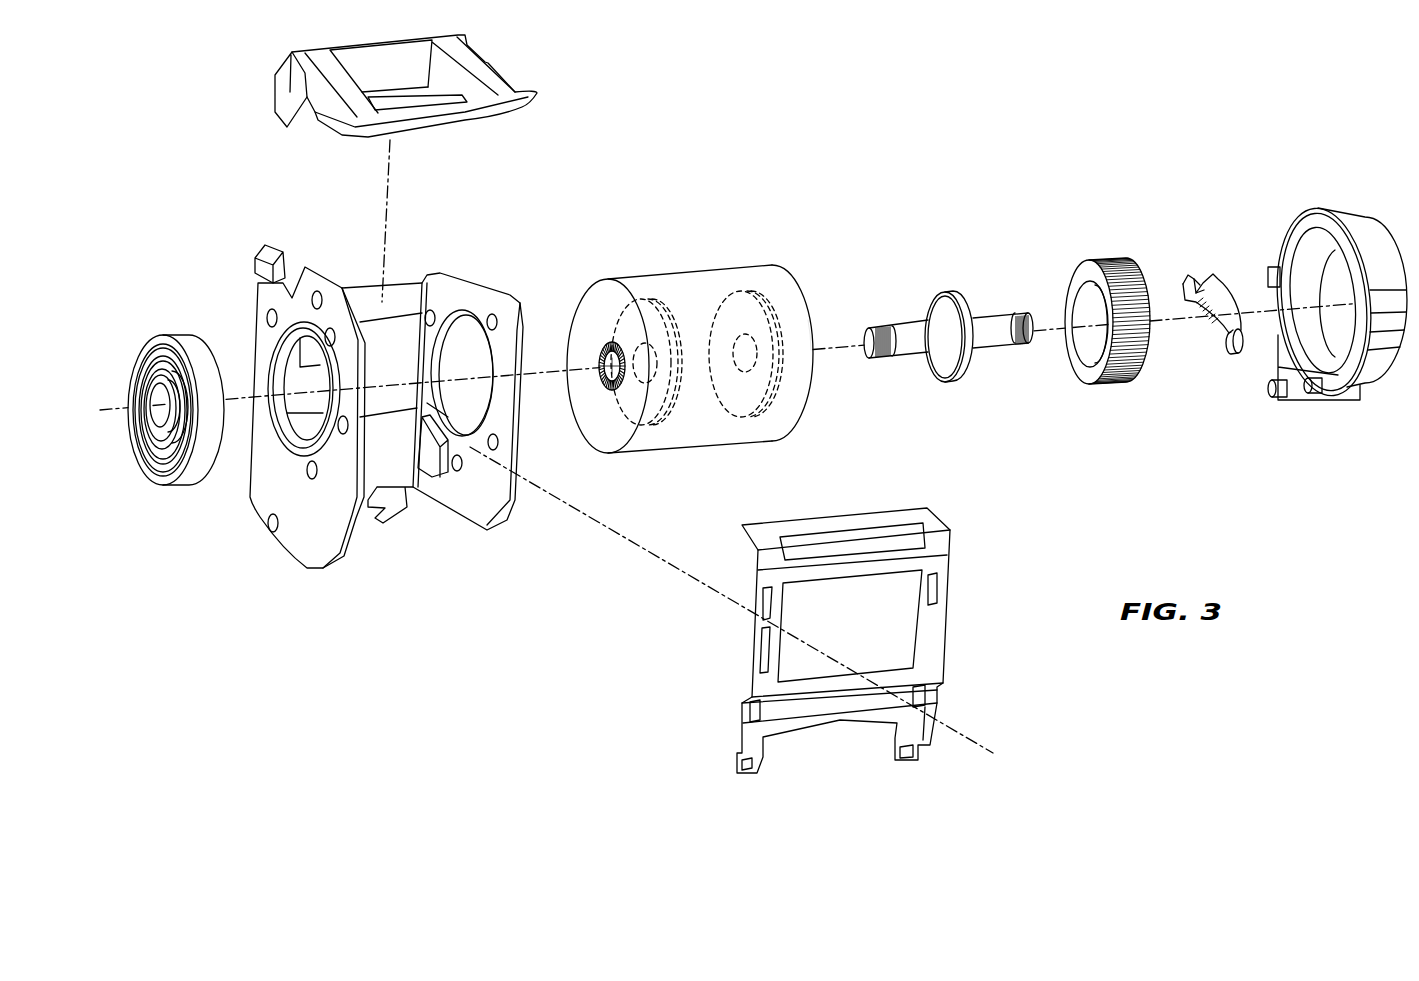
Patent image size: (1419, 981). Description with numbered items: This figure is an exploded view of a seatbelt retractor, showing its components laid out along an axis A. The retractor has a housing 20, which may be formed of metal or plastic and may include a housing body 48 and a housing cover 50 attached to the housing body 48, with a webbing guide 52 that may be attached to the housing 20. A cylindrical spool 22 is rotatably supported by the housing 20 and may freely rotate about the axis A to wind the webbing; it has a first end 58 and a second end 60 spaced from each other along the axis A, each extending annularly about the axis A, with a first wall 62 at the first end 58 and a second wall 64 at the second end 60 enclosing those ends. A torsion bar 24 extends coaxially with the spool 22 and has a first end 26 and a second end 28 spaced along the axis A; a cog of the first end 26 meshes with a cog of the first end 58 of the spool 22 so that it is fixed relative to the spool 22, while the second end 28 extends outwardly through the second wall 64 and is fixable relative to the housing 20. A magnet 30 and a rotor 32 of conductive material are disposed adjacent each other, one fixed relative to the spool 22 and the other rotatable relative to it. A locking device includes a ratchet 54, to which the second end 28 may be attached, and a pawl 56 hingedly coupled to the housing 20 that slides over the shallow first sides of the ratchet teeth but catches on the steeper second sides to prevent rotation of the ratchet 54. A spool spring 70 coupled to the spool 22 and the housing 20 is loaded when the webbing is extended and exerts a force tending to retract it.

The axis A is at (718, 446).
The housing 20 is at (383, 466).
The spool 22 is at (700, 353).
The torsion bar 24 is at (931, 339).
The first end 26 is at (882, 358).
The second end 28 is at (1025, 348).
The magnet 30 is at (673, 325).
The rotor 32 is at (950, 380).
The housing body 48 is at (320, 567).
The housing cover 50 is at (742, 778).
The webbing guide 52 is at (537, 92).
The ratchet 54 is at (1099, 260).
The pawl 56 is at (1216, 348).
The first end 58 is at (578, 298).
The second end 60 is at (805, 283).
The first wall 62 is at (613, 428).
The second wall 64 is at (812, 333).
The spool spring 70 is at (183, 488).